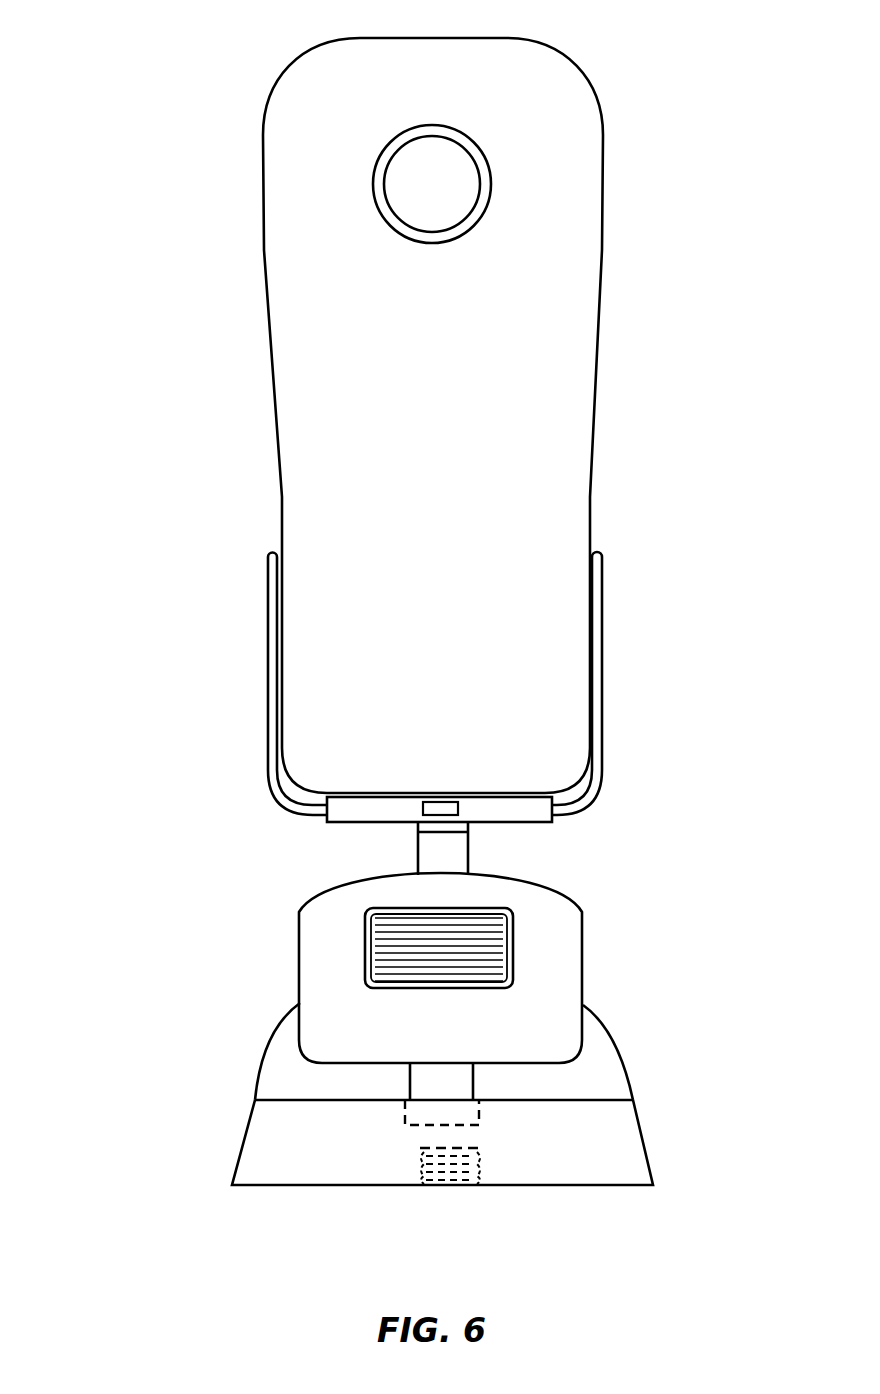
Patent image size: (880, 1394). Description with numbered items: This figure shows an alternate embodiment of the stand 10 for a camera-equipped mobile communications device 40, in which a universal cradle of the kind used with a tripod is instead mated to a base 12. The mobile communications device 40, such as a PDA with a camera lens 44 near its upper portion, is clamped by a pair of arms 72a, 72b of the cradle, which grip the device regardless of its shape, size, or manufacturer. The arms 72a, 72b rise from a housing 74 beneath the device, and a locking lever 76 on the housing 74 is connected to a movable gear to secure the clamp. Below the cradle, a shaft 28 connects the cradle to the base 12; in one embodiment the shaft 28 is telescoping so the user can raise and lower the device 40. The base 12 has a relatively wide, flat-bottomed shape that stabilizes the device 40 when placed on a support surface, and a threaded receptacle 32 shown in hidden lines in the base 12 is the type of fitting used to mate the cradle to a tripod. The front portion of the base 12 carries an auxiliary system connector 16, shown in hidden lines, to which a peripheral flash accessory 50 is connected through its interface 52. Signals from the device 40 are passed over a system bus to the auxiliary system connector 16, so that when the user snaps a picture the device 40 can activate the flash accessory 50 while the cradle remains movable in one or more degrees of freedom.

The stand 10 is at (177, 1040).
The base 12 is at (593, 1030).
The auxiliary system connector 16 is at (417, 1126).
The shaft 28 is at (428, 853).
The threaded receptacle 32 is at (440, 1178).
The mobile communications device 40 is at (635, 88).
The camera lens 44 is at (458, 163).
The flash accessory 50 is at (550, 960).
The interface 52 is at (458, 1077).
The arm 72a is at (270, 677).
The arm 72b is at (603, 698).
The housing 74 is at (523, 822).
The locking lever 76 is at (440, 807).